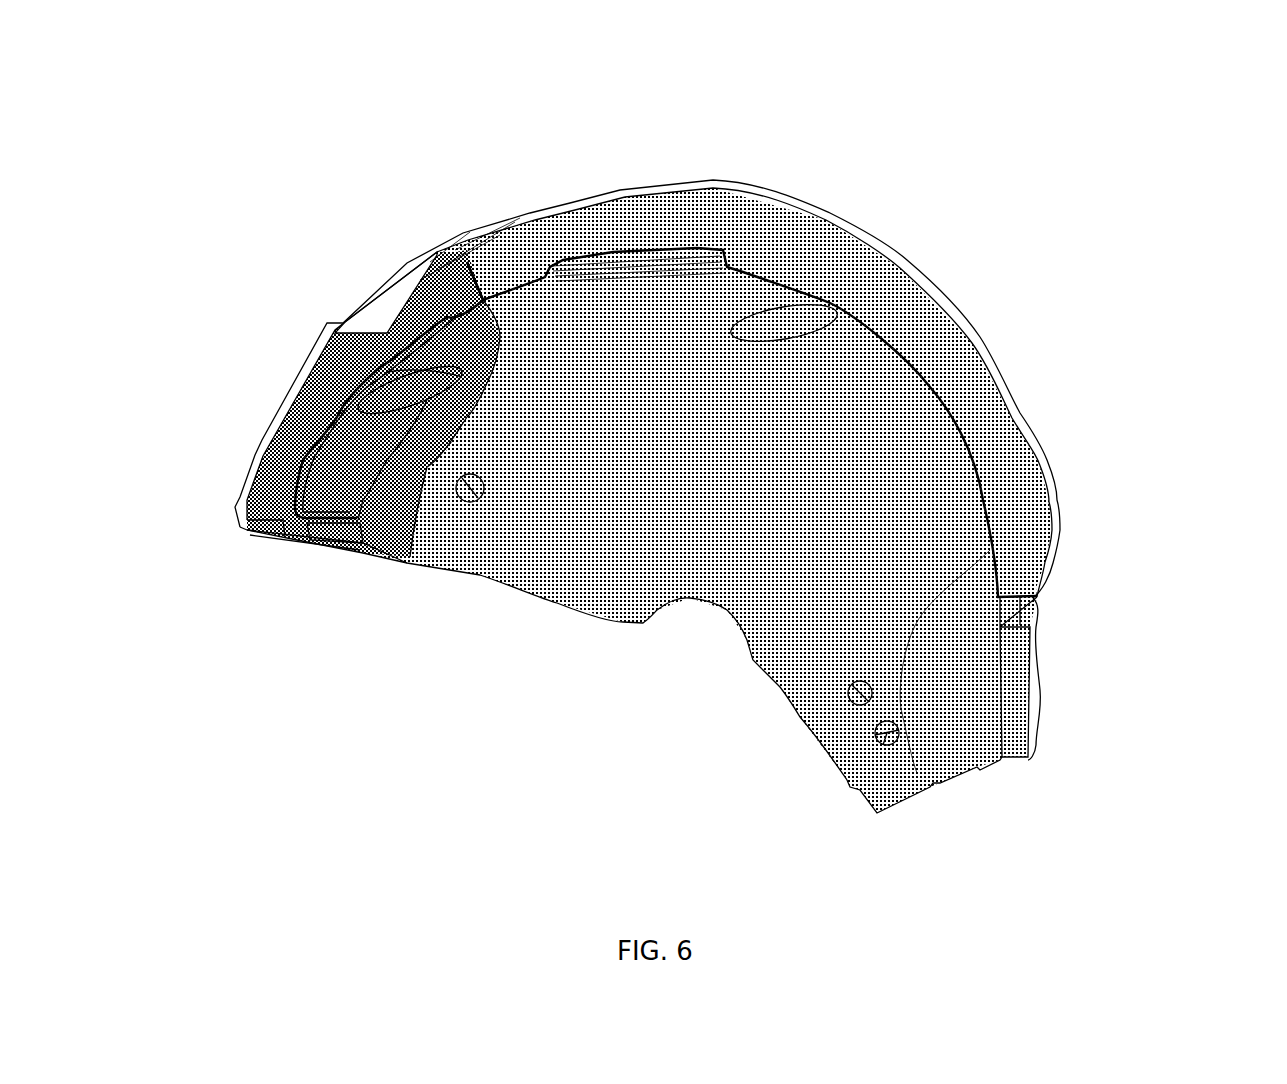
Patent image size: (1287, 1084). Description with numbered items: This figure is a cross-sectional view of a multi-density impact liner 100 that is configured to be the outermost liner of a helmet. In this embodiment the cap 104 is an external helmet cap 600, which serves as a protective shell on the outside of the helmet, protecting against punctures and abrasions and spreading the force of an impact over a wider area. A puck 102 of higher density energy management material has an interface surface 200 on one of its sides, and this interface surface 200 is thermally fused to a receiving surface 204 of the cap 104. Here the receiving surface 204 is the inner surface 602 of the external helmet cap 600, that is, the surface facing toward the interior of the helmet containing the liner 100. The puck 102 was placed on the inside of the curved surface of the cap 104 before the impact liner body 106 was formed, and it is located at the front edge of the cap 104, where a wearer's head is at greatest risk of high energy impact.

The multi-density impact liner 100 is at (670, 427).
The puck 102 is at (283, 440).
The cap 104 is at (830, 215).
The impact liner body 106 is at (980, 427).
The interface surface 200 is at (255, 458).
The receiving surface 204 is at (620, 202).
The external helmet cap 600 is at (907, 260).
The inner surface 602 is at (1050, 480).